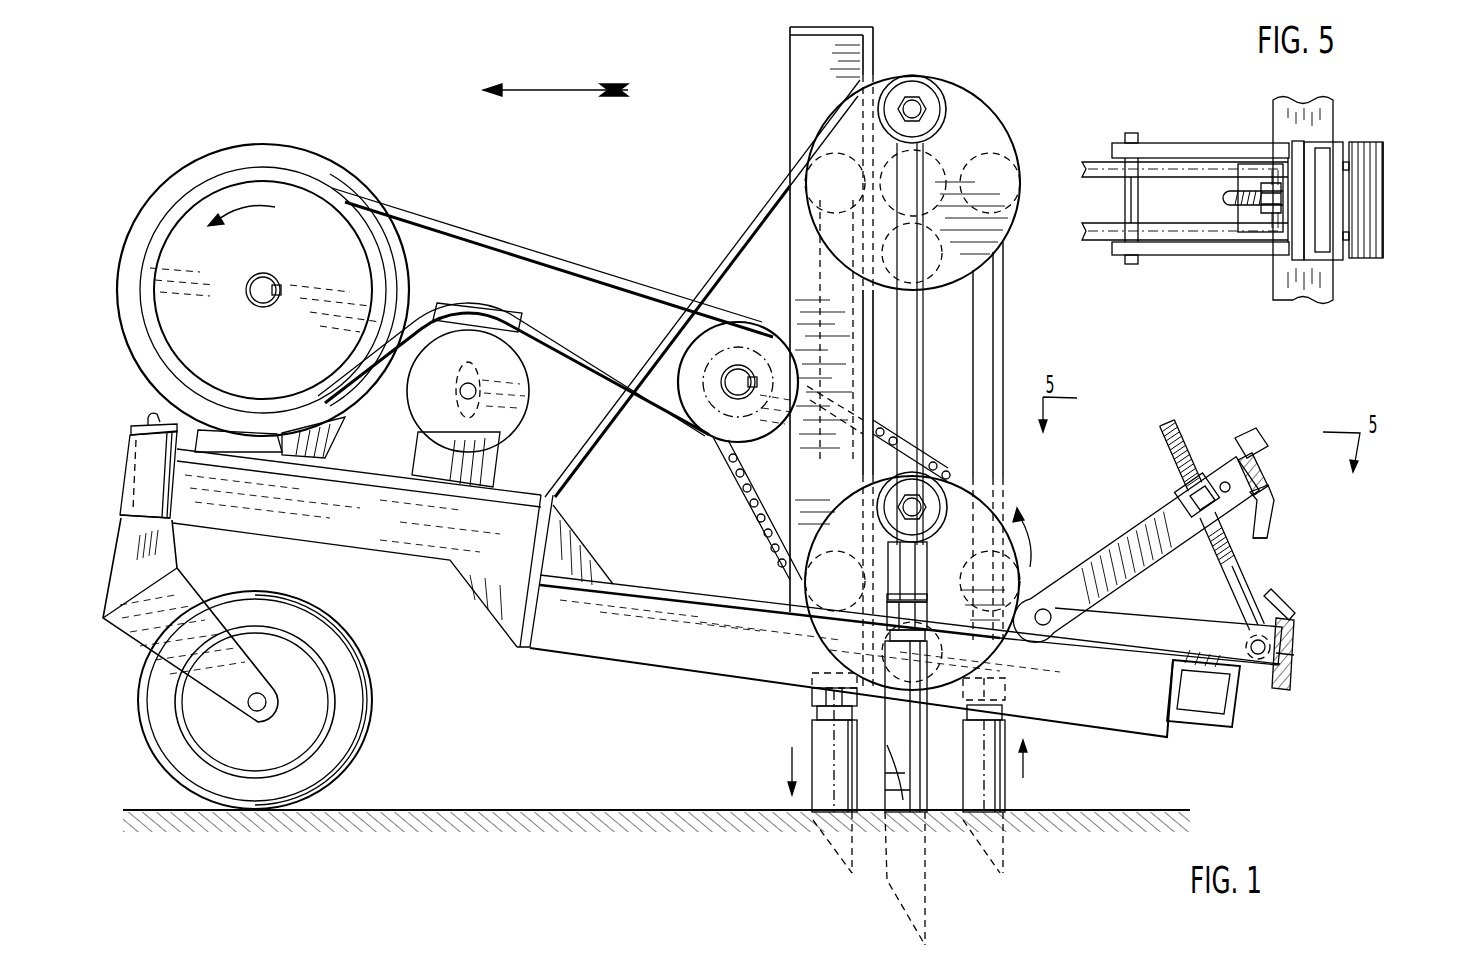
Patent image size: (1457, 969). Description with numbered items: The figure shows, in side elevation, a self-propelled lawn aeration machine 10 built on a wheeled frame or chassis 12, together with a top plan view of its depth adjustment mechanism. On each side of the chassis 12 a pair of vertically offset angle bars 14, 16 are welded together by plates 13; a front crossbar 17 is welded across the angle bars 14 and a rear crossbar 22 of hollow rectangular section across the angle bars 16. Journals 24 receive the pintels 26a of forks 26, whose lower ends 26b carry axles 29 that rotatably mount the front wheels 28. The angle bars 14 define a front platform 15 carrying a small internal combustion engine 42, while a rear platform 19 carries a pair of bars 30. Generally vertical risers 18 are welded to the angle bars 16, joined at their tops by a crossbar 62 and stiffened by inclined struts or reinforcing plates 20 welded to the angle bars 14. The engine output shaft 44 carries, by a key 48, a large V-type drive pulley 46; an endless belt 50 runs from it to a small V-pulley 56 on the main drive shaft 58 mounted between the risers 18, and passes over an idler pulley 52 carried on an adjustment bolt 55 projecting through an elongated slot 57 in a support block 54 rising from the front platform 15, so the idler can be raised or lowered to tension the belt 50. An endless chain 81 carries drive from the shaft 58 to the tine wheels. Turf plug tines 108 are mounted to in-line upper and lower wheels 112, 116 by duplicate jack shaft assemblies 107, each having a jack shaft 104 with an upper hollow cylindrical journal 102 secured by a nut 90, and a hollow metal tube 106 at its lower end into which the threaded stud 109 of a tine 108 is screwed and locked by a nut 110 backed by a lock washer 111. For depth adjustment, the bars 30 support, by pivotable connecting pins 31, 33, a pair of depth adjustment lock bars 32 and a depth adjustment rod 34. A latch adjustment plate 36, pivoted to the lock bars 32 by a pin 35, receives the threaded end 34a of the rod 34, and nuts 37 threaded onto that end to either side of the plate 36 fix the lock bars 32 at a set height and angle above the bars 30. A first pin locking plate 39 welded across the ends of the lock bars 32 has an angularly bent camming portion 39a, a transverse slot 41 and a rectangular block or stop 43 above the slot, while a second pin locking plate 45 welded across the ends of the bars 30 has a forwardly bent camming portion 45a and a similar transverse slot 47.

In FIG. 1, the self-propelled lawn aeration machine 10 is at (590, 230).
In FIG. 1, the wheeled frame or chassis 12 is at (510, 658).
In FIG. 1, the plates 13 is at (556, 550).
In FIG. 1, the angle bars 14 is at (375, 540).
In FIG. 1, the front platform 15 is at (372, 468).
In FIG. 1, the angle bars 16 is at (680, 662).
In FIG. 1, the crossbar 17 is at (140, 482).
In FIG. 1, the risers 18 is at (876, 52).
In FIG. 1, the rear platform 19 is at (692, 586).
In FIG. 1, the inclined struts or reinforcing plates 20 is at (590, 442).
In FIG. 1, the crossbar 22 is at (1195, 722).
In FIG. 5, the crossbar 22 is at (1340, 285).
In FIG. 1, the journals 24 is at (130, 436).
In FIG. 1, the forks 26 is at (180, 590).
In FIG. 1, the pintels 26a is at (150, 420).
In FIG. 1, the lower ends of the forks 26b is at (245, 682).
In FIG. 1, the front wheels 28 is at (370, 716).
In FIG. 1, the axles 29 is at (262, 703).
In FIG. 1, the bars 30 is at (1145, 624).
In FIG. 5, the bars 30 is at (1175, 224).
In FIG. 1, the pivotable connecting pin 31 is at (1048, 613).
In FIG. 5, the pivotable connecting pin 31 is at (1130, 266).
In FIG. 1, the depth adjustment lock bars 32 is at (1112, 560).
In FIG. 5, the depth adjustment lock bars 32 is at (1175, 150).
In FIG. 1, the pivotable connecting pin 33 is at (1258, 660).
In FIG. 1, the depth adjustment rod 34 is at (1216, 570).
In FIG. 1, the threaded projecting end 34a is at (1175, 428).
In FIG. 5, the threaded projecting end 34a is at (1228, 188).
In FIG. 1, the pin 35 is at (1225, 480).
In FIG. 1, the latch adjustment plate 36 is at (1176, 502).
In FIG. 5, the latch adjustment plate 36 is at (1250, 166).
In FIG. 1, the nuts 37 is at (1185, 489).
In FIG. 5, the nuts 37 is at (1270, 216).
In FIG. 1, the first pin locking plate 39 is at (1290, 500).
In FIG. 5, the first pin locking plate 39 is at (1338, 145).
In FIG. 1, the angularly bent camming portion 39a is at (1270, 532).
In FIG. 1, the transverse elongated slot 41 is at (1264, 474).
In FIG. 1, the internal combustion engine 42 is at (283, 298).
In FIG. 1, the rectangular block or stop 43 is at (1266, 447).
In FIG. 5, the rectangular block or stop 43 is at (1304, 160).
In FIG. 1, the output shaft 44 is at (268, 280).
In FIG. 1, the second pin locking plate 45 is at (1296, 688).
In FIG. 5, the second pin locking plate 45 is at (1388, 186).
In FIG. 1, the oblique forwardly bent camming portion 45a is at (1276, 596).
In FIG. 5, the oblique forwardly bent camming portion 45a is at (1390, 236).
In FIG. 1, the V-type drive pulley 46 is at (365, 238).
In FIG. 1, the elongated transverse slot 47 is at (1296, 653).
In FIG. 1, the key 48 is at (278, 300).
In FIG. 1, the endless belt 50 is at (605, 278).
In FIG. 1, the idler pulley 52 is at (425, 407).
In FIG. 1, the support block 54 is at (480, 482).
In FIG. 1, the adjustment bolt 55 is at (482, 396).
In FIG. 1, the V-pulley 56 is at (752, 430).
In FIG. 1, the elongated slot 57 is at (490, 388).
In FIG. 1, the main drive shaft 58 is at (746, 370).
In FIG. 1, the crossbar 62 is at (790, 31).
In FIG. 1, the endless chain 81 is at (742, 490).
In FIG. 1, the nut 90 is at (920, 496).
In FIG. 1, the hollow cylindrical journal 102 is at (930, 84).
In FIG. 1, the jack shaft 104 is at (975, 400).
In FIG. 1, the hollow metal tube 106 is at (920, 562).
In FIG. 1, the jack shaft assembly 107 is at (925, 358).
In FIG. 1, the turf plug tines 108 is at (818, 745).
In FIG. 1, the threaded stud 109 is at (888, 637).
In FIG. 1, the nut 110 is at (888, 618).
In FIG. 1, the lock washer 111 is at (926, 612).
In FIG. 1, the upper wheel 112 is at (975, 122).
In FIG. 1, the second lower wheel 116 is at (1000, 494).